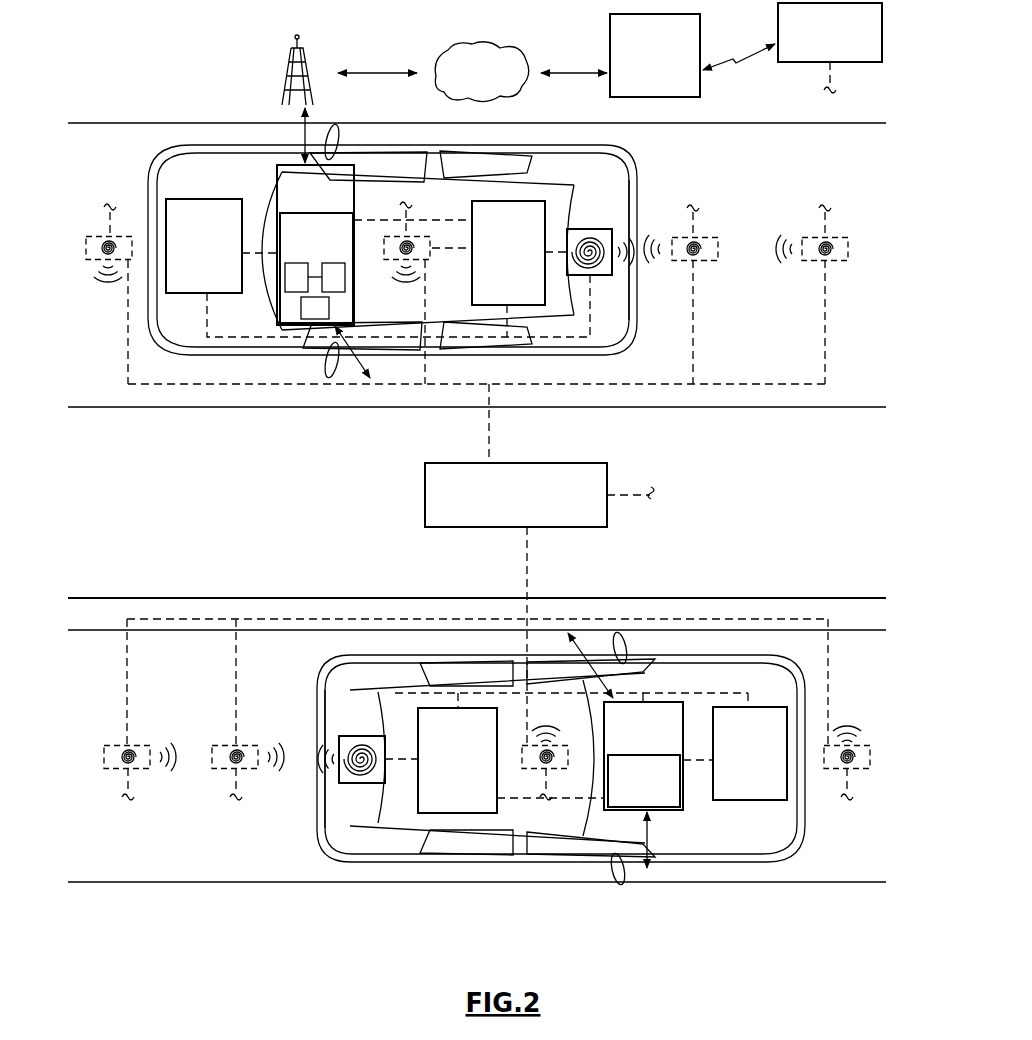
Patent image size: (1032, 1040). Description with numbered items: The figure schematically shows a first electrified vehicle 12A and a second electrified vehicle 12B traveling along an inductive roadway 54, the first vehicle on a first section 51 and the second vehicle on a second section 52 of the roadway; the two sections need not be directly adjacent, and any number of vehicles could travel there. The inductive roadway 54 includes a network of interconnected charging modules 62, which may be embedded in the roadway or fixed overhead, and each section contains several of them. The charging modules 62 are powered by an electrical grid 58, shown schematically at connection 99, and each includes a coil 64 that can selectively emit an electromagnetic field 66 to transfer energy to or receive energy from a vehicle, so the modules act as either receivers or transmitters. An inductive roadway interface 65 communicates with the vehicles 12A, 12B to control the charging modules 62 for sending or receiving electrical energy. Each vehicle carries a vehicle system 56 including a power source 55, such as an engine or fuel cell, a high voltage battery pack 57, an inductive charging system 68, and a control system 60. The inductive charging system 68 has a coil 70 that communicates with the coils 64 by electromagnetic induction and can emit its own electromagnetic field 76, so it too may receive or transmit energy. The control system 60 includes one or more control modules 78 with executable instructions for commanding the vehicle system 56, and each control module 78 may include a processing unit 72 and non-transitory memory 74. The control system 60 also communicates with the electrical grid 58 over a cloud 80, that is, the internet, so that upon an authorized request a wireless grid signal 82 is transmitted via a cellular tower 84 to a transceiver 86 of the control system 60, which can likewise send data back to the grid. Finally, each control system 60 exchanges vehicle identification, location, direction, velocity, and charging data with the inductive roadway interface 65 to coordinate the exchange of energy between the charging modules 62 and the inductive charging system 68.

The first electrified vehicle 12A is at (633, 164).
The second electrified vehicle 12B is at (319, 845).
The first section 51 is at (112, 409).
The second section 52 is at (112, 884).
The inductive roadway 54 is at (163, 578).
The power source 55 is at (198, 199).
The vehicle system 56 is at (200, 297).
The high voltage battery pack 57 is at (472, 286).
The electrical grid 58 is at (778, 27).
The control system 60 is at (277, 193).
The charging module 62 is at (115, 238).
The coil 64 is at (106, 245).
The inductive roadway interface 65 is at (607, 470).
The electromagnetic field 66 is at (107, 283).
The inductive charging system 68 is at (588, 228).
The coil 70 is at (592, 276).
The processing unit 72 is at (303, 277).
The non-transitory memory 74 is at (333, 277).
The electromagnetic field 76 is at (629, 228).
The control module 78 is at (280, 306).
The cloud 80 is at (520, 92).
The wireless grid signal 82 is at (700, 88).
The cellular tower 84 is at (307, 57).
The transceiver 86 is at (315, 306).
The connection 99 is at (838, 85).